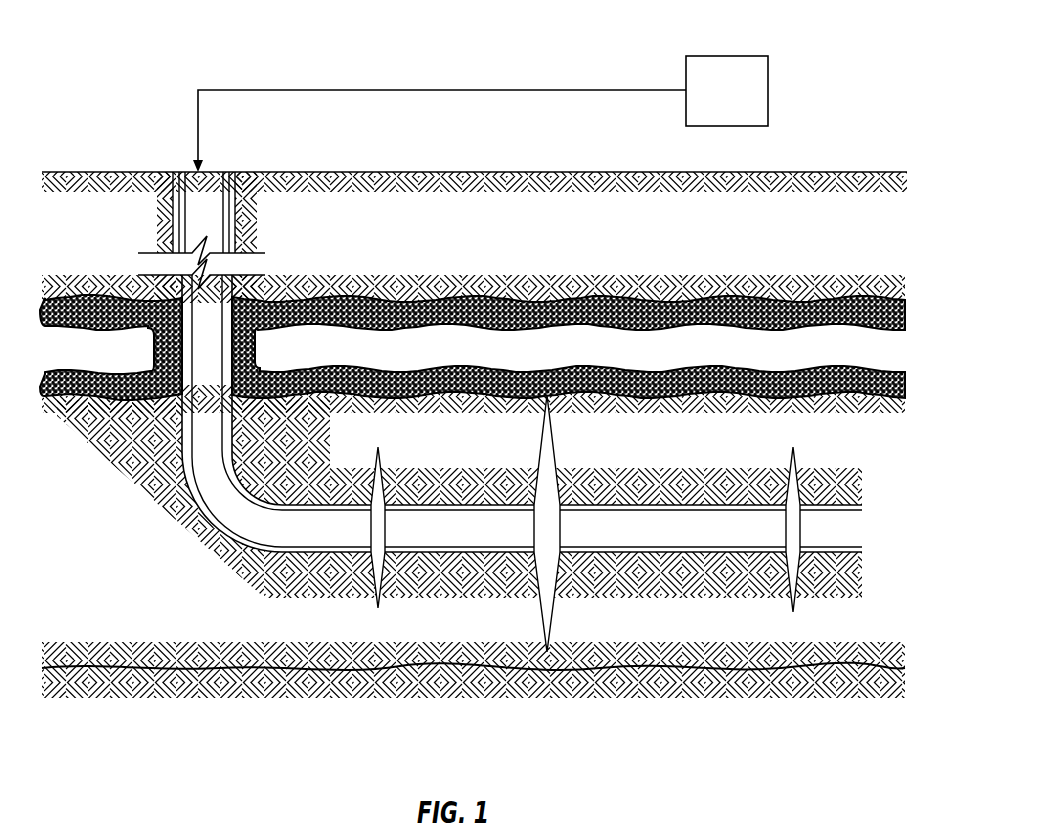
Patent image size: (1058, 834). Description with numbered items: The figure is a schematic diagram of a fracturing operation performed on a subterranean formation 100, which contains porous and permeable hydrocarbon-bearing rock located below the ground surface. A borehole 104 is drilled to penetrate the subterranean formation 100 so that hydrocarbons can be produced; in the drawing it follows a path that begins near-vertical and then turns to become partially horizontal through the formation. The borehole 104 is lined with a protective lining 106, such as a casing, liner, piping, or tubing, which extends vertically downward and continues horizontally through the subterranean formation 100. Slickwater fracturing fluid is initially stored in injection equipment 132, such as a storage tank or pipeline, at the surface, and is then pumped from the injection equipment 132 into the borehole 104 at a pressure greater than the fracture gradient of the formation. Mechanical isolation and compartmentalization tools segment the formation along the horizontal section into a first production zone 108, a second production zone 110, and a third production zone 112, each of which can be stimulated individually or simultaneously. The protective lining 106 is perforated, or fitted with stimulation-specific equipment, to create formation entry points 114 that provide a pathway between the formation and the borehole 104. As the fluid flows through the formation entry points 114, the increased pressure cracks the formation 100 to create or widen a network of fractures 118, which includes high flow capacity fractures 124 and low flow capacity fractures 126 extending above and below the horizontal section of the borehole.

The subterranean formation 100 is at (836, 27).
The borehole 104 is at (208, 388).
The protective lining 106 is at (245, 240).
The first production zone 108 is at (317, 587).
The second production zone 110 is at (500, 587).
The third production zone 112 is at (756, 572).
The formation entry points 114 is at (370, 485).
The network of fractures 118 is at (884, 481).
The high flow capacity fractures 124 is at (553, 433).
The low flow capacity fractures 126 is at (380, 452).
The injection equipment 132 is at (768, 90).